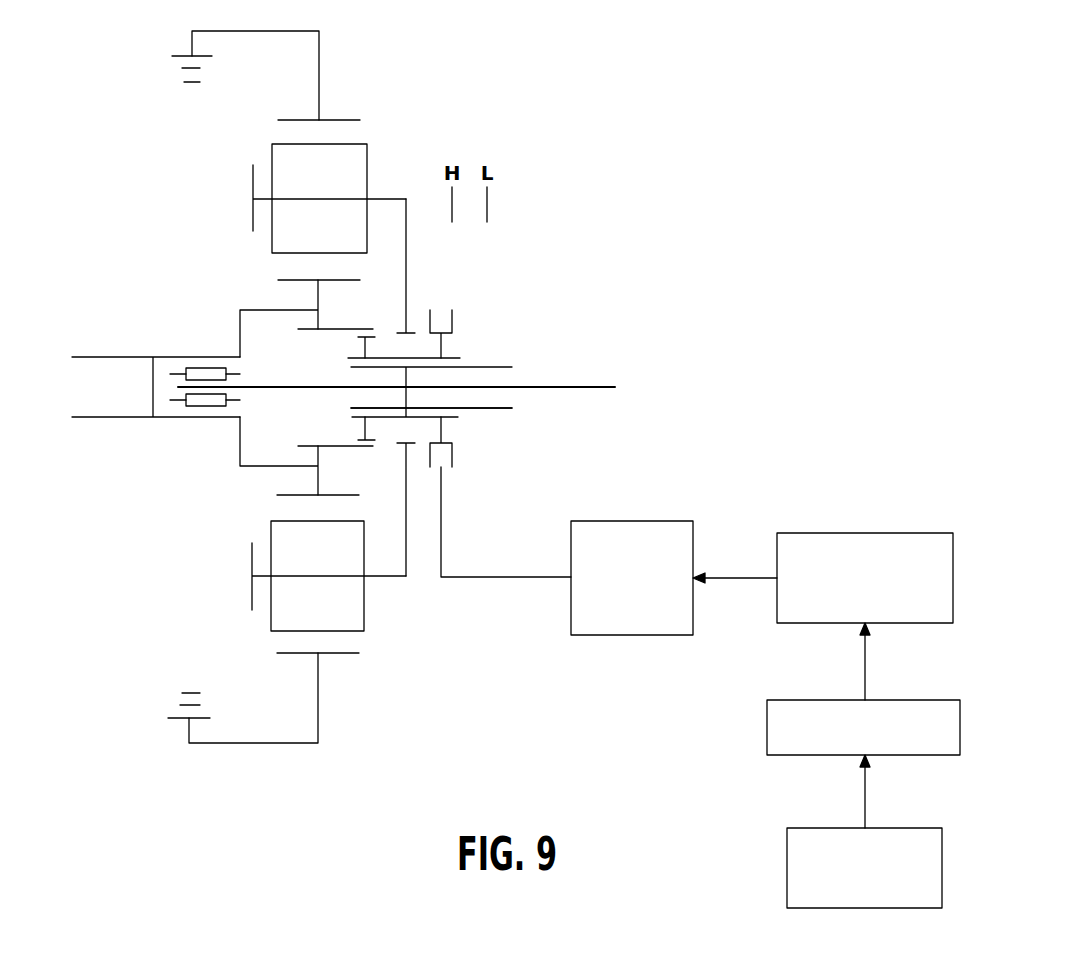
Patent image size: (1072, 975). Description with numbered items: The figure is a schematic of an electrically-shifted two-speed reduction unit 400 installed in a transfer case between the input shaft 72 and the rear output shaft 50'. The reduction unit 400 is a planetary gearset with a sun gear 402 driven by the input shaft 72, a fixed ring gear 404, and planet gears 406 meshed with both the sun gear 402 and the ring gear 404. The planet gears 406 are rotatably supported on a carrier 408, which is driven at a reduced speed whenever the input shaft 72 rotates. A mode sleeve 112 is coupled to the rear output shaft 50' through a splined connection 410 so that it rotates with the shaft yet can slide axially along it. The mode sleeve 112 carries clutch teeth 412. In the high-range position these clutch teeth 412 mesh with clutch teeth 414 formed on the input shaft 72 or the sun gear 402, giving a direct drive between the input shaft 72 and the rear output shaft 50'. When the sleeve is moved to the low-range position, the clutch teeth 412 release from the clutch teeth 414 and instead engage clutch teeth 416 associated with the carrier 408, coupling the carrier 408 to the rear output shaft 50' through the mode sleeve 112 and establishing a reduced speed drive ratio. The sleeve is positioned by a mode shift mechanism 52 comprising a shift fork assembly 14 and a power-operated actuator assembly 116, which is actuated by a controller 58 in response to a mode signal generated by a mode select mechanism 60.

The input shaft 72 is at (112, 357).
The two-speed reduction unit 400 is at (652, 208).
The sun gear 402 is at (287, 279).
The fixed ring gear 404 is at (290, 124).
The planet gears 406 is at (285, 536).
The carrier 408 is at (407, 242).
The splined connection 410 is at (420, 408).
The clutch teeth 412 is at (357, 328).
The clutch teeth 414 is at (312, 332).
The clutch teeth 416 is at (404, 441).
The mode sleeve 112 is at (442, 340).
The rear output shaft 50' is at (396, 366).
The mode shift mechanism 52 is at (598, 500).
The shift fork assembly 14 is at (597, 622).
The power-operated actuator assembly 116 is at (935, 578).
The controller 58 is at (947, 719).
The mode select mechanism 60 is at (933, 863).